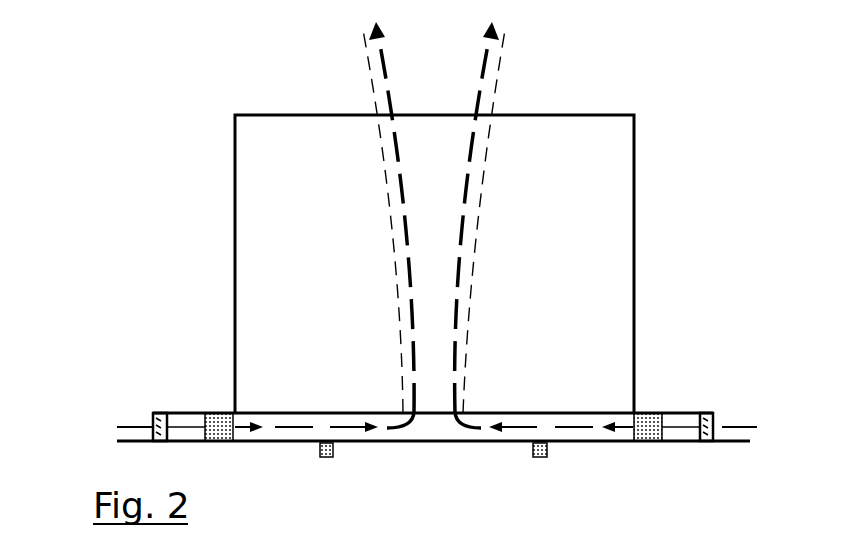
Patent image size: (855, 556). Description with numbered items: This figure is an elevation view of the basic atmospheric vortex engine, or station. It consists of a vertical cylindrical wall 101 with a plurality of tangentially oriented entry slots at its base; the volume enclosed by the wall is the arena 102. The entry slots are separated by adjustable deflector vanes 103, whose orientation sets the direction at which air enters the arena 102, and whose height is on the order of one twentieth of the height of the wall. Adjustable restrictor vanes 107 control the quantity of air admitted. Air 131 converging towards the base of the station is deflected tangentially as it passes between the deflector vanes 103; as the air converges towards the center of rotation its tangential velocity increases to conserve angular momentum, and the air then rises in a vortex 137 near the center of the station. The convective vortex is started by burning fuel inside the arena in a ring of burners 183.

The vertical cylindrical wall 101 is at (648, 221).
The arena 102 is at (575, 296).
The adjustable deflector vanes 103 is at (218, 402).
The adjustable restrictor vanes 107 is at (158, 402).
The air 131 is at (134, 416).
The vortex 137 is at (487, 199).
The ring of burners 183 is at (342, 462).